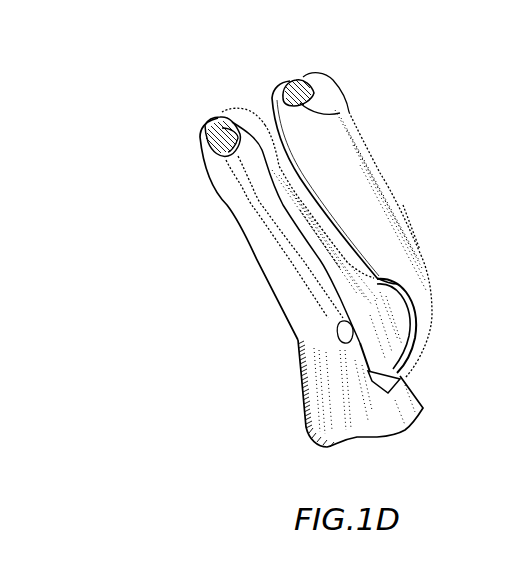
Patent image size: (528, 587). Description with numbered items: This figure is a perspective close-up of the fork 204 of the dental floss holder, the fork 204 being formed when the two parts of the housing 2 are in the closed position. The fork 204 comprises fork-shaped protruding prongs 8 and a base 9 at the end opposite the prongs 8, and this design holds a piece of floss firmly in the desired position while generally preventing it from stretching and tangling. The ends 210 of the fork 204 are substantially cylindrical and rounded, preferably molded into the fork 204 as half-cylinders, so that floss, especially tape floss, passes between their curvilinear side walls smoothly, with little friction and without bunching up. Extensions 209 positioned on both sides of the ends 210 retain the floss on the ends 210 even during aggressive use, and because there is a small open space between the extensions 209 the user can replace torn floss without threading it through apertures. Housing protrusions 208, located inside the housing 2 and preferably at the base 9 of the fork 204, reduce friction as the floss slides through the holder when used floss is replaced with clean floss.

The floss holder housing 2 is at (313, 251).
The fork prongs 8 is at (249, 215).
The base 9 is at (415, 303).
The fork 204 is at (268, 254).
The housing protrusions 208 is at (340, 335).
The extensions 209 is at (290, 82).
The ends 210 is at (206, 150).